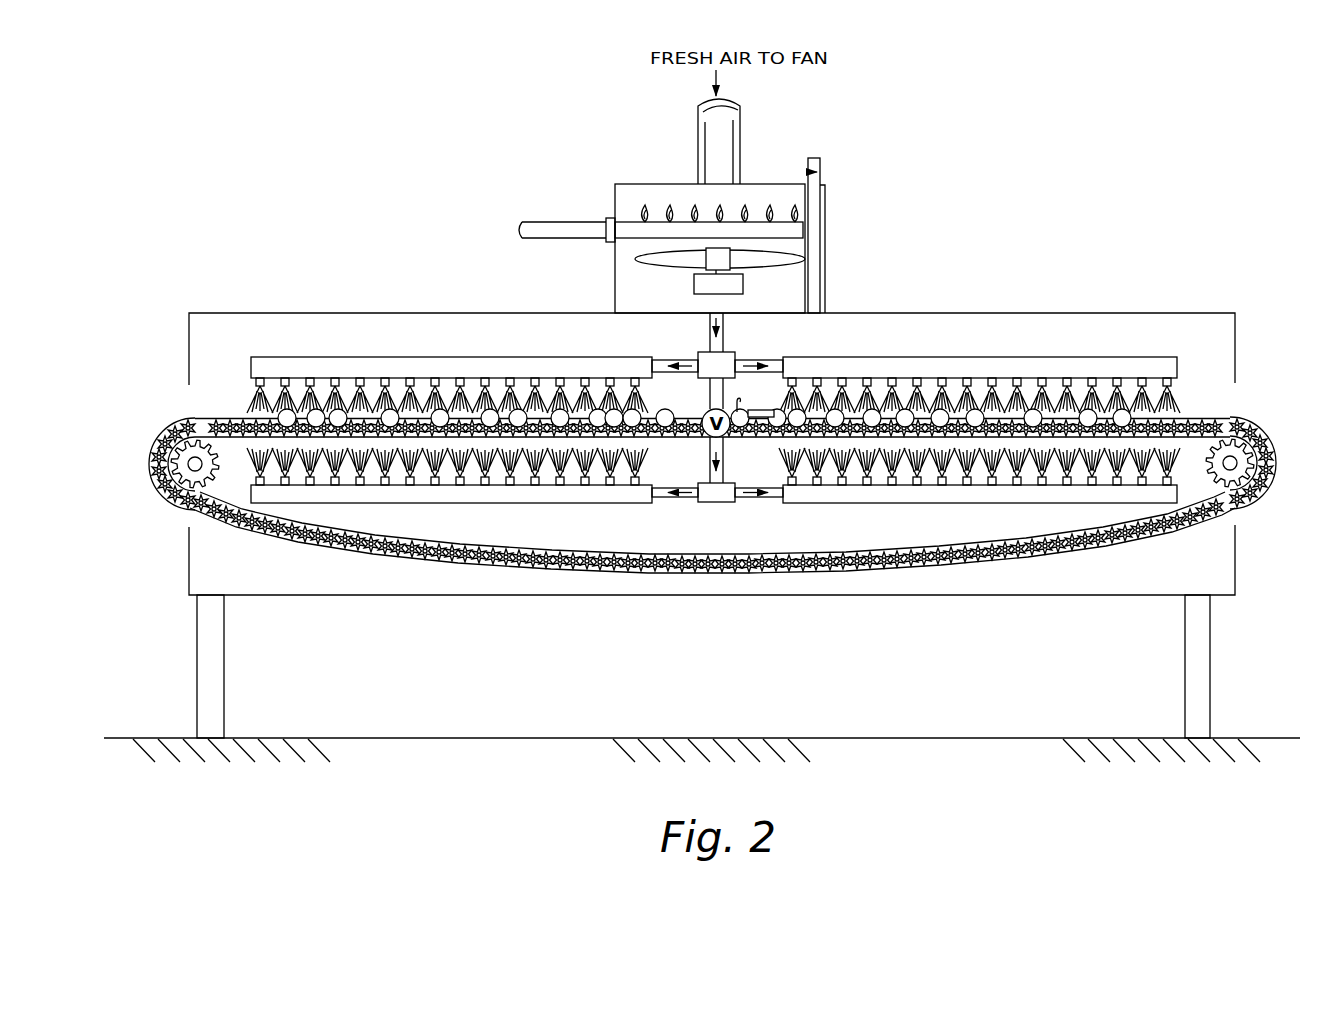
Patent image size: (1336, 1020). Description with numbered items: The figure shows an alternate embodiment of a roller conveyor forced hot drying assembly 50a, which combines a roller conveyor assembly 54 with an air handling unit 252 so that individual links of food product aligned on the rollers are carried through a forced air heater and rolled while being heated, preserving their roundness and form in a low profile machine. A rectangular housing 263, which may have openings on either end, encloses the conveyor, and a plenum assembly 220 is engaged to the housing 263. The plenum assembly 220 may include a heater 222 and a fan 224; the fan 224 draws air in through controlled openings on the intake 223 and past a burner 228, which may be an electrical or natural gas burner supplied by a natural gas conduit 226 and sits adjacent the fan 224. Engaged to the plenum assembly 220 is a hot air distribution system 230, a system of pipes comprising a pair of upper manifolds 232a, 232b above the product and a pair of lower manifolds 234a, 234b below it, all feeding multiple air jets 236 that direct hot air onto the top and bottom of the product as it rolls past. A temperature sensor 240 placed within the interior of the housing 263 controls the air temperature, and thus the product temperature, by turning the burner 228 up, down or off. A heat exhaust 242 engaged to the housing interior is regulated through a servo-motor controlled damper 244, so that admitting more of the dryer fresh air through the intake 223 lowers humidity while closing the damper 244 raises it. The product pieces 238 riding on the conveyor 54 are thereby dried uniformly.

The heater 222 is at (662, 180).
The intake 223 is at (736, 126).
The burner 228 is at (753, 221).
The natural gas conduit 226 is at (489, 231).
The fan 224 is at (707, 288).
The heat exhaust 242 is at (822, 151).
The servo-motor controlled damper 244 is at (922, 181).
The plenum assembly 220 is at (833, 258).
The roller conveyor forced hot drying assembly 50a is at (1194, 282).
The air handling unit 252 is at (1205, 312).
The rectangular housing 263 is at (1237, 357).
The roller conveyor assembly 54 is at (1249, 418).
The upper manifold 232a is at (606, 357).
The upper manifold 232b is at (1047, 356).
The hot air distribution system 230 is at (1003, 343).
The lower manifold 234a is at (627, 504).
The lower manifold 234b is at (852, 504).
The air jets 236 is at (946, 488).
The articles on conveyor 238 is at (706, 412).
The temperature sensor 240 is at (778, 399).